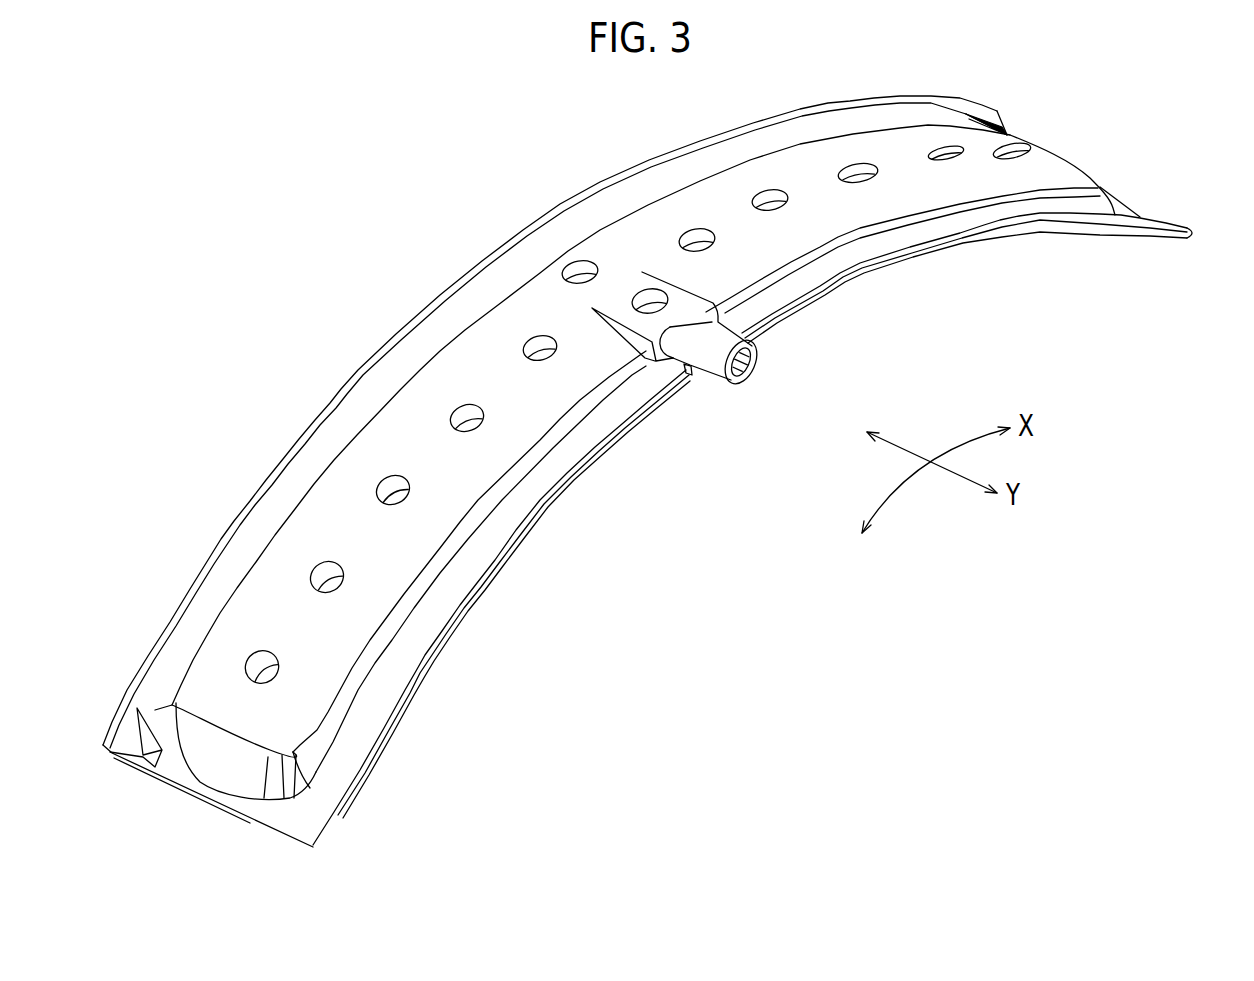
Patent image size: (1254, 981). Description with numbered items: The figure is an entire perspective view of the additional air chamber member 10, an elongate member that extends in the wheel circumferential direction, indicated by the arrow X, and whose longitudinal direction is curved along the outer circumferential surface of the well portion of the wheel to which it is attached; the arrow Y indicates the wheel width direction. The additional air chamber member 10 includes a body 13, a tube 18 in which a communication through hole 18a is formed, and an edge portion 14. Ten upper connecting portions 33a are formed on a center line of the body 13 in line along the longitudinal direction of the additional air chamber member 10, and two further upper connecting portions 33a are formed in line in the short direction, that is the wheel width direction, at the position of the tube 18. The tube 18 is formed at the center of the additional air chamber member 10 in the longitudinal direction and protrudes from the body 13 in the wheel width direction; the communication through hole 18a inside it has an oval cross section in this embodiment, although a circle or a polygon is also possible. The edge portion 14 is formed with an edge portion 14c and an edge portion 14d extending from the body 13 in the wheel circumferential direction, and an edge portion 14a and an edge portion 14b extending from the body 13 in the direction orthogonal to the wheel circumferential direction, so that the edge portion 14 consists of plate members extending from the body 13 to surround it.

The additional air chamber member 10 is at (476, 189).
The body 13 is at (483, 460).
The edge portion 14 is at (669, 489).
The edge portion 14a is at (835, 264).
The edge portion 14b is at (696, 180).
The edge portion 14c is at (247, 802).
The edge portion 14d is at (1116, 216).
The tube 18 is at (711, 364).
The communication through hole 18a is at (754, 361).
The upper connecting portion 33a is at (582, 270).